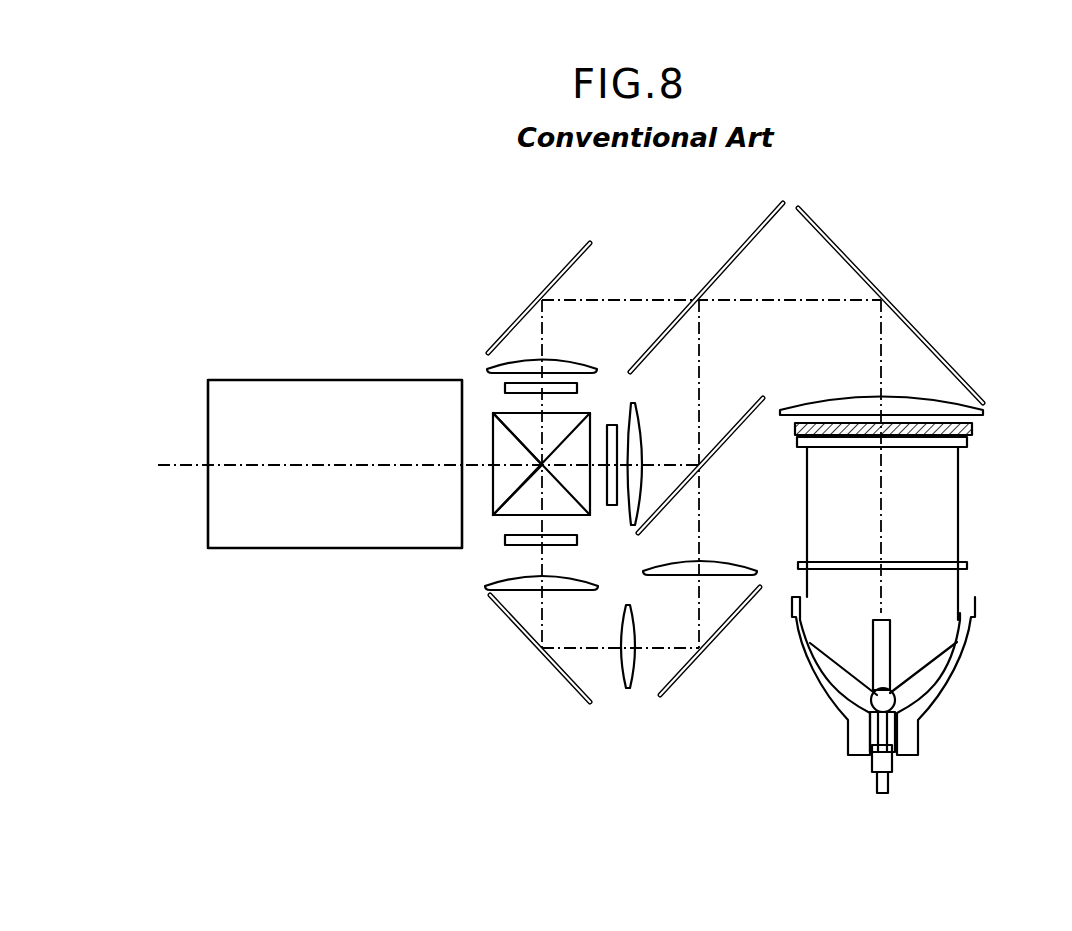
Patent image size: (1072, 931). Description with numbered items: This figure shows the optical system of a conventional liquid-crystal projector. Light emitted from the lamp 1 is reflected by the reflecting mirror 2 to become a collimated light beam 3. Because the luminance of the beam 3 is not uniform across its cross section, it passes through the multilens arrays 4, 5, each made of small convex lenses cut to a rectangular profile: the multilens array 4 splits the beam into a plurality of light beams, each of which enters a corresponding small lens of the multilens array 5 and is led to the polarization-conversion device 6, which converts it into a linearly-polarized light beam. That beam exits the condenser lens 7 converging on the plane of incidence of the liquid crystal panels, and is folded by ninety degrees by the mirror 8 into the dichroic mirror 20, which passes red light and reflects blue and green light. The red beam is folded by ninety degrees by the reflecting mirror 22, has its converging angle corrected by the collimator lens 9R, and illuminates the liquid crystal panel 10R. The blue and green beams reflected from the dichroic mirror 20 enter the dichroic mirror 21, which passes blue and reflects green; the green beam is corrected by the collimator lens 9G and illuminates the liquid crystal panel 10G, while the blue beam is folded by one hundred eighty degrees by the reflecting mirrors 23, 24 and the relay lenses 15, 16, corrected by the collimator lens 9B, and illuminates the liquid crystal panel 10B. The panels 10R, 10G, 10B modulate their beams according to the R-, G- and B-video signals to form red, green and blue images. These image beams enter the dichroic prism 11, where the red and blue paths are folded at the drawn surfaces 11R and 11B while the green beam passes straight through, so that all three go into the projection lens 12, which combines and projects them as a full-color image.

The lamp 1 is at (897, 700).
The reflecting mirror 2 is at (937, 662).
The collimated light beam 3 is at (958, 585).
The multilens array 4 is at (920, 562).
The multilens array 5 is at (910, 447).
The polarization-conversion device 6 is at (975, 429).
The condenser lens 7 is at (983, 408).
The mirror 8 is at (910, 322).
The collimator lens 9R is at (557, 357).
The collimator lens 9G is at (642, 447).
The collimator lens 9B is at (573, 582).
The liquid crystal panel 10R is at (505, 383).
The liquid crystal panel 10G is at (612, 425).
The liquid crystal panel 10B is at (505, 545).
The dichroic prism 11 is at (568, 513).
The dichroic prism 11B is at (493, 438).
The dichroic prism 11R is at (493, 497).
The projection lens 12 is at (283, 380).
The relay lens 15 is at (722, 552).
The relay lens 16 is at (627, 688).
The dichroic mirror 20 is at (740, 248).
The dichroic mirror 21 is at (738, 415).
The reflecting mirror 22 is at (557, 277).
The reflecting mirror 23 is at (695, 663).
The reflecting mirror 24 is at (513, 622).